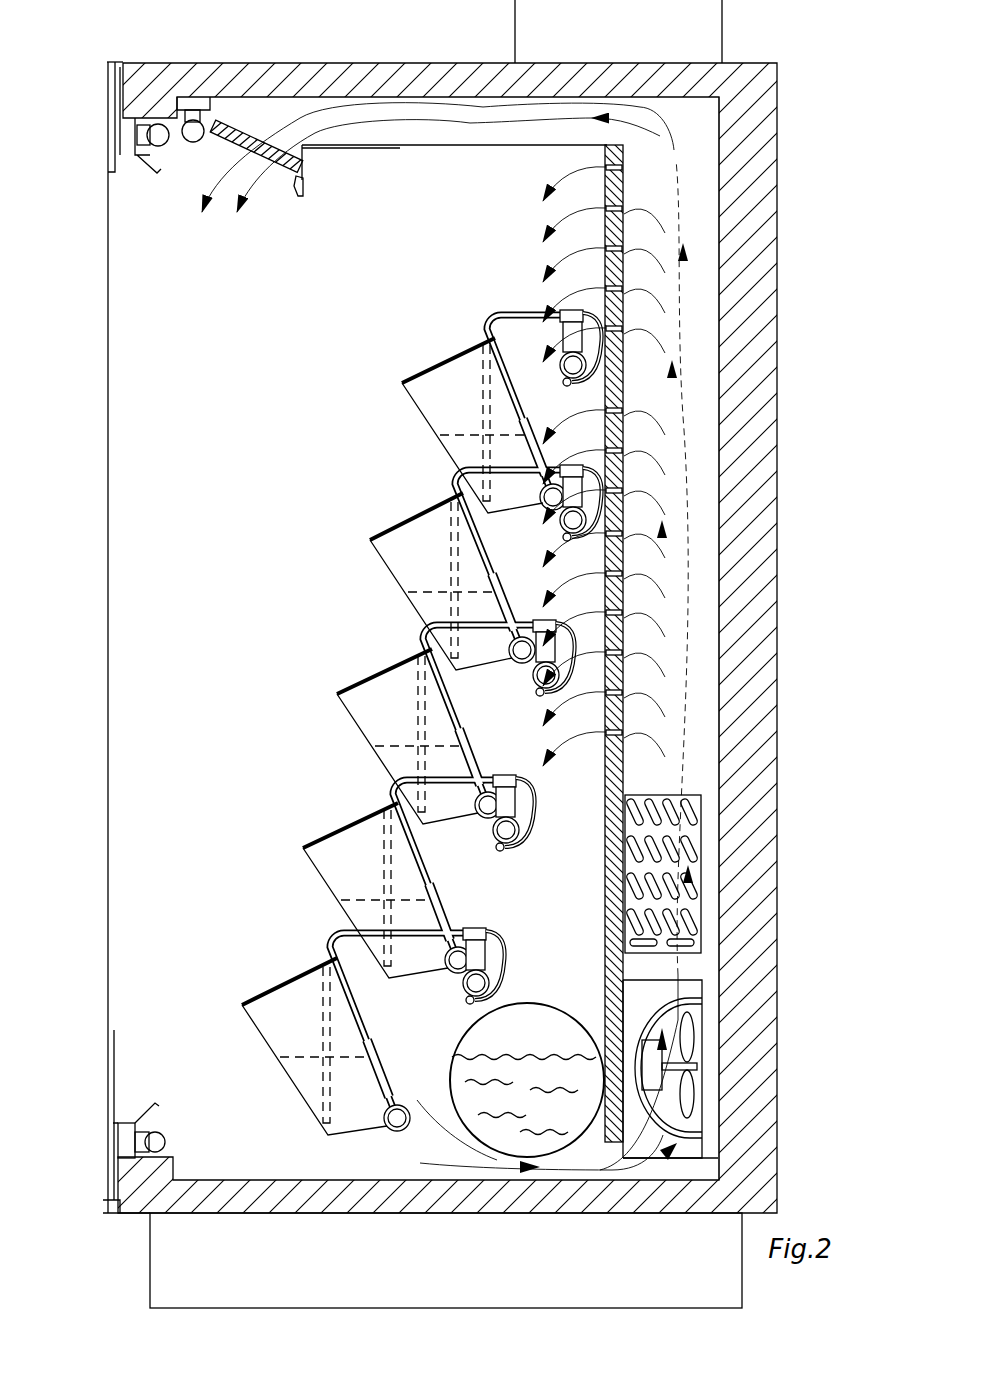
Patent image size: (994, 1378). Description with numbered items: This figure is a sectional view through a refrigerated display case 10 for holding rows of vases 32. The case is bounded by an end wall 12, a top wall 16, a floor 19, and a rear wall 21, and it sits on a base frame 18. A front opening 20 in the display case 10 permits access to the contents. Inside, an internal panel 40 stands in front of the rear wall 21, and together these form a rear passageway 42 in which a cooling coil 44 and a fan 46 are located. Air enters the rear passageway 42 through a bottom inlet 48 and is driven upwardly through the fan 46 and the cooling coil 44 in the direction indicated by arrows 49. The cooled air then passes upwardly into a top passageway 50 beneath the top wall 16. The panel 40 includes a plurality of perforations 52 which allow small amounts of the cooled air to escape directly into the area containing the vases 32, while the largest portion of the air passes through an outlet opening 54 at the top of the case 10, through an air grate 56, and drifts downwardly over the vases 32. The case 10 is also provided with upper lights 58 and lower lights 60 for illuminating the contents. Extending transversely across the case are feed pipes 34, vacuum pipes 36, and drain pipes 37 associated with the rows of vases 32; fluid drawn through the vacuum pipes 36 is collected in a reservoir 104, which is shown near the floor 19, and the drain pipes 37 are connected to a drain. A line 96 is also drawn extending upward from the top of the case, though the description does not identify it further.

The display case 10 is at (101, 31).
The end wall 12 is at (190, 584).
The top wall 16 is at (300, 63).
The base frame 18 is at (150, 1260).
The floor 19 is at (280, 1180).
The front opening 20 is at (148, 525).
The rear wall 21 is at (777, 280).
The vase 32 is at (392, 381).
The feed pipe 34 is at (563, 382).
The vacuum pipe 36 is at (560, 365).
The drain pipe 37 is at (603, 477).
The internal panel 40 is at (605, 858).
The rear passageway 42 is at (700, 640).
The cooling coil 44 is at (702, 848).
The fan 46 is at (690, 1032).
The bottom inlet 48 is at (677, 1170).
The arrows 49 is at (672, 138).
The top passageway 50 is at (458, 128).
The perforations 52 is at (627, 150).
The outlet opening 54 is at (263, 125).
The air grate 56 is at (282, 172).
The upper lights 58 is at (193, 142).
The lower lights 60 is at (160, 1137).
The supply line 96 is at (515, 2).
The reservoir 104 is at (452, 1075).